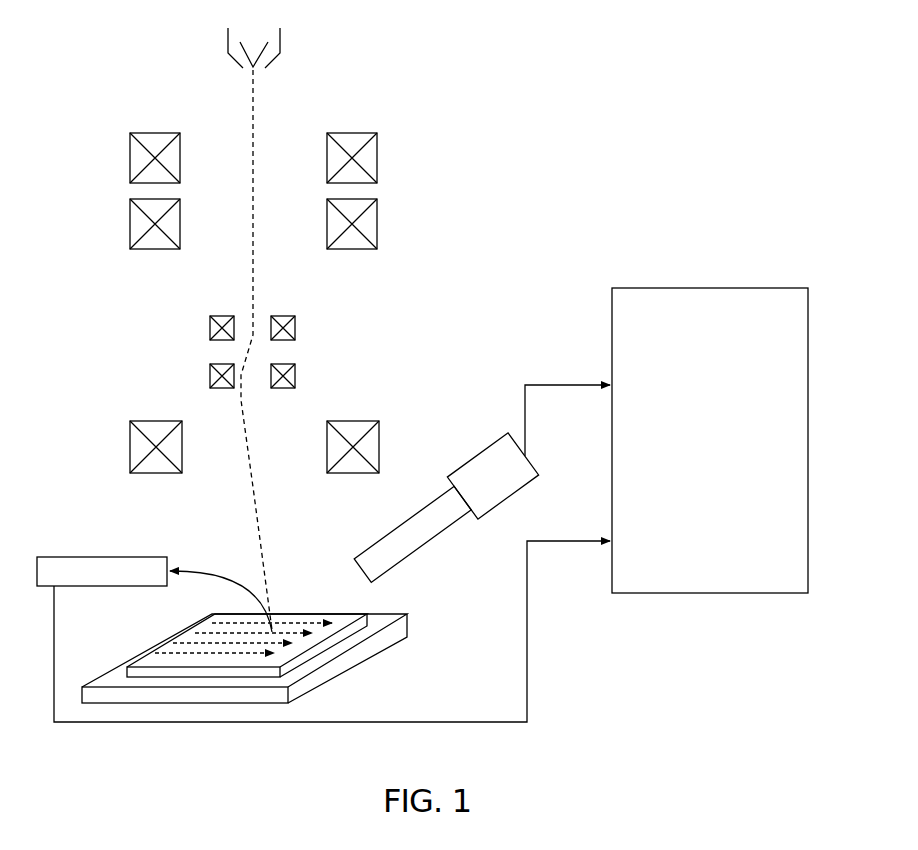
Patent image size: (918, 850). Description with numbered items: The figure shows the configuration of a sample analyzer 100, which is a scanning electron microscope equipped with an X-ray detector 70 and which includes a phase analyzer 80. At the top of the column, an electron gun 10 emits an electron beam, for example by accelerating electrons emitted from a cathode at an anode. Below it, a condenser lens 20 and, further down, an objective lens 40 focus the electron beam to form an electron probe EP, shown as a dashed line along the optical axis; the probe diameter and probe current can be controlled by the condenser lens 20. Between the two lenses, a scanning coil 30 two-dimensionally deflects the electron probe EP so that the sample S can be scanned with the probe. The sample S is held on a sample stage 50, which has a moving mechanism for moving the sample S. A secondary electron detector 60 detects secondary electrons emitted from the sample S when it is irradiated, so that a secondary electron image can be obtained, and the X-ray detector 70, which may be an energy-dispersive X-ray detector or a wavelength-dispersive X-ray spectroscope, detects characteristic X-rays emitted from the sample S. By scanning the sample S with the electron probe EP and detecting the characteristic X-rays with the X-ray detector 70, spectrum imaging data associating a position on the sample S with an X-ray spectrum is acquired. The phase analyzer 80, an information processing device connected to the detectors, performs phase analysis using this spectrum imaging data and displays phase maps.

The sample analyzer 100 is at (586, 46).
The electron gun 10 is at (227, 47).
The condenser lens 20 is at (130, 226).
The scanning coil 30 is at (210, 376).
The objective lens 40 is at (130, 452).
The sample stage 50 is at (108, 682).
The secondary electron detector 60 is at (92, 570).
The X-ray detector 70 is at (472, 458).
The phase analyzer 80 is at (740, 288).
The electron probe EP is at (264, 562).
The sample S is at (153, 657).